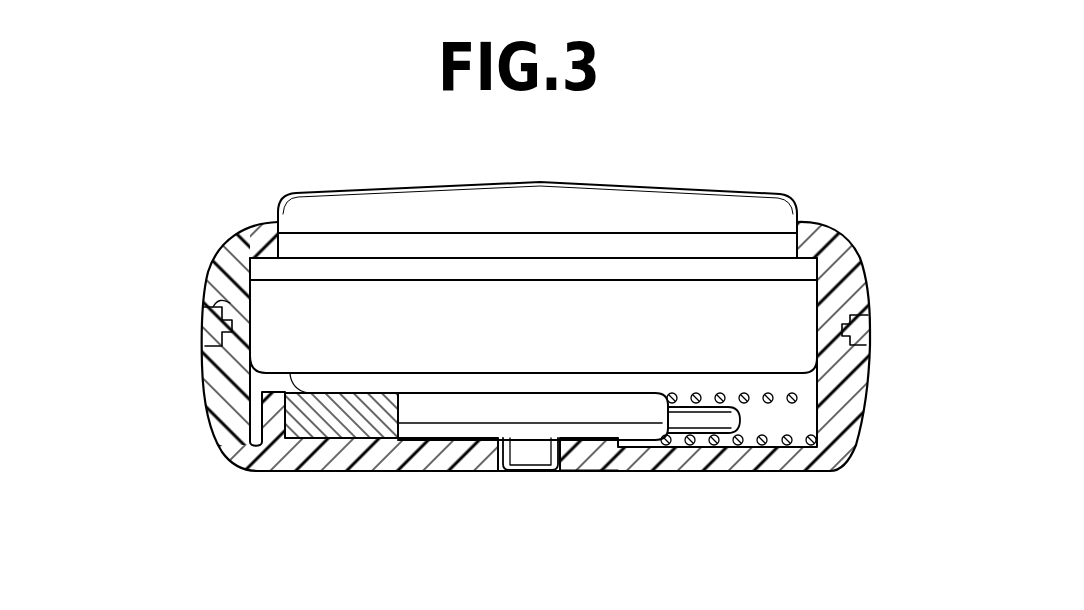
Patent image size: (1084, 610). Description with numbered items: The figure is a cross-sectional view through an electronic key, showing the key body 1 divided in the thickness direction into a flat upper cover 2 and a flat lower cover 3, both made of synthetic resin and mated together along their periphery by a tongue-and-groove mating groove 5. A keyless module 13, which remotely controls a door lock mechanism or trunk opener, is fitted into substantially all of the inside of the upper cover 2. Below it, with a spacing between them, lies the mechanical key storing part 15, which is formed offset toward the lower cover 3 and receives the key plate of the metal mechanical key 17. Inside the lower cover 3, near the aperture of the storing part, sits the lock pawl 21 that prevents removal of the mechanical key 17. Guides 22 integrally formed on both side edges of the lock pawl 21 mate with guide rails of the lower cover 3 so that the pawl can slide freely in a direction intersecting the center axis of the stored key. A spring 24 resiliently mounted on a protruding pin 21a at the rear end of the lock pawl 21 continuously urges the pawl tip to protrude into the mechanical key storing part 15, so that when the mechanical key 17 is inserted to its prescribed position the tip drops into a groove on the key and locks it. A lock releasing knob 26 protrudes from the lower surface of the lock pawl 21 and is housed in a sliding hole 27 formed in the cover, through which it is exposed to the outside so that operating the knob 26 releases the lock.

The key body 1 is at (857, 237).
The upper cover 2 is at (220, 238).
The lower cover 3 is at (205, 426).
The tongue-and-groove mating groove 5 is at (203, 334).
The keyless module 13 is at (723, 188).
The mechanical key storing part 15 is at (360, 432).
The mechanical key 17 is at (307, 428).
The lock pawl 21 is at (466, 415).
The protruding pin 21a is at (703, 436).
The guides 22 is at (647, 427).
The spring 24 is at (785, 442).
The lock releasing knob 26 is at (558, 455).
The sliding hole 27 is at (605, 456).